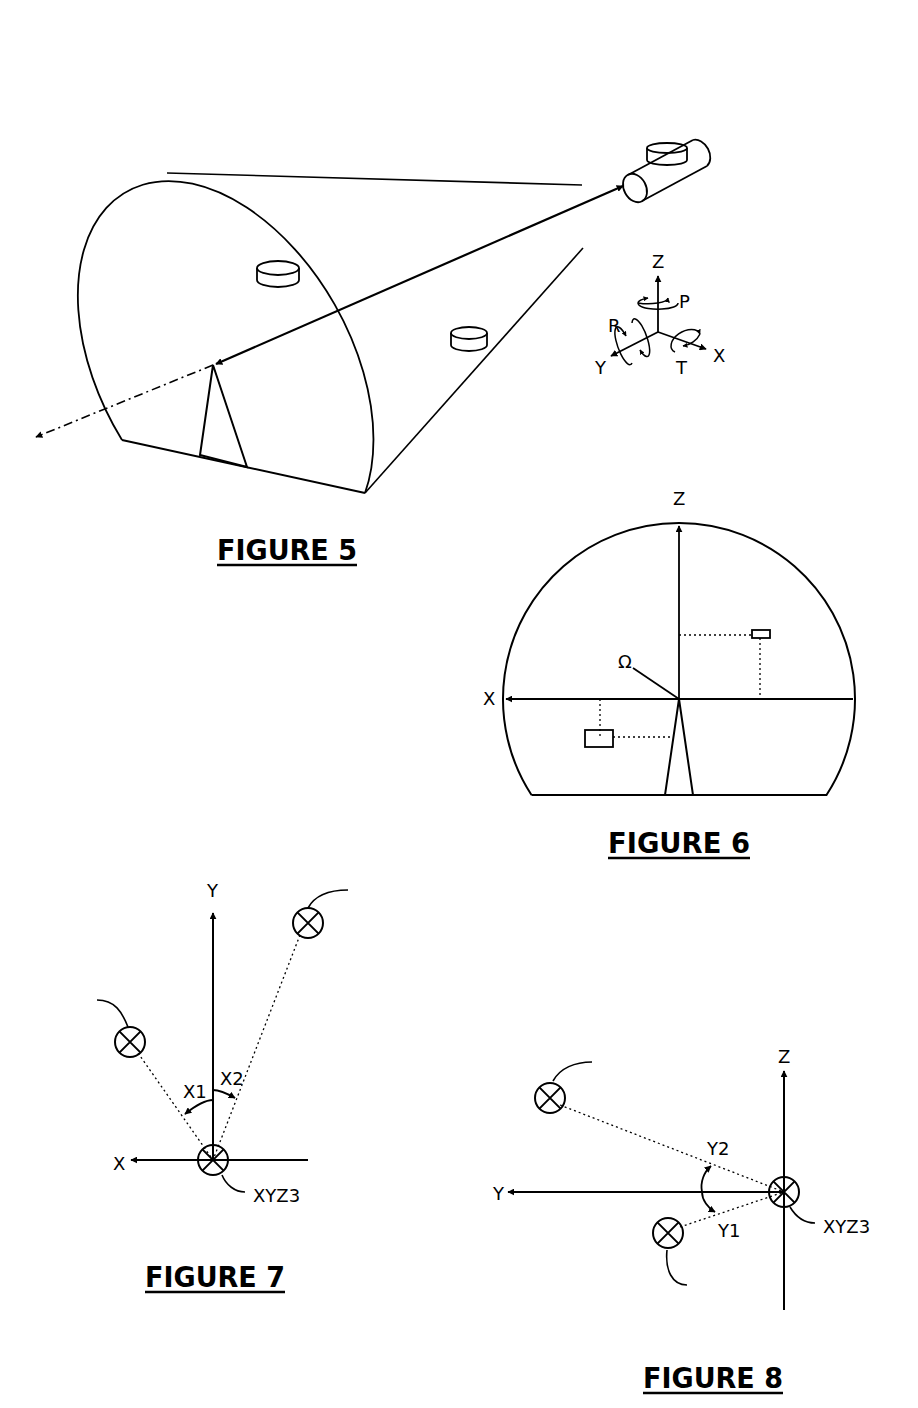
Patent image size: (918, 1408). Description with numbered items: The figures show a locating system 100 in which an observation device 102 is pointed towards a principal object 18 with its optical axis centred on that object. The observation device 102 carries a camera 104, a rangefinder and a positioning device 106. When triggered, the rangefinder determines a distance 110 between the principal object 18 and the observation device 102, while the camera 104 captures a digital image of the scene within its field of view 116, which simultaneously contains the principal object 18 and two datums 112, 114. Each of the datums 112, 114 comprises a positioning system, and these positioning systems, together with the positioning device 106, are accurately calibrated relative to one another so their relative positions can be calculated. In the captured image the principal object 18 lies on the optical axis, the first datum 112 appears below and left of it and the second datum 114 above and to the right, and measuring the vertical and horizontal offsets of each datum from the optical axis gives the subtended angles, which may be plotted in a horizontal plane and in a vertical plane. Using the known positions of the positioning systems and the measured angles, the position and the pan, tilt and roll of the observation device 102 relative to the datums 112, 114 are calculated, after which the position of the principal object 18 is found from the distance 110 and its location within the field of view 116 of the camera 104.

In FIG. 5, the locating system 100 is at (64, 73).
In FIG. 5, the observation device 102 is at (704, 110).
In FIG. 5, the camera 104 is at (665, 183).
In FIG. 5, the positioning device 106 is at (667, 145).
In FIG. 5, the distance 110 is at (428, 272).
In FIG. 5, the first datum 112 is at (472, 348).
In FIG. 6, the first datum 112 is at (597, 740).
In FIG. 7, the first datum 112 is at (121, 1049).
In FIG. 8, the first datum 112 is at (653, 1238).
In FIG. 5, the second datum 114 is at (274, 268).
In FIG. 6, the second datum 114 is at (765, 630).
In FIG. 7, the second datum 114 is at (323, 927).
In FIG. 8, the second datum 114 is at (551, 1092).
In FIG. 5, the field of view 116 is at (88, 247).
In FIG. 6, the field of view 116 is at (758, 540).
In FIG. 5, the principal object 18 is at (220, 447).
In FIG. 6, the principal object 18 is at (680, 778).